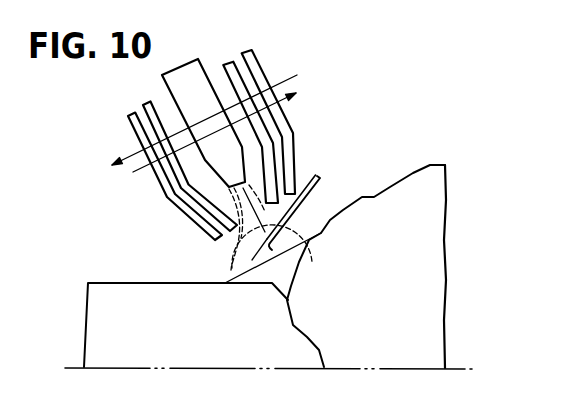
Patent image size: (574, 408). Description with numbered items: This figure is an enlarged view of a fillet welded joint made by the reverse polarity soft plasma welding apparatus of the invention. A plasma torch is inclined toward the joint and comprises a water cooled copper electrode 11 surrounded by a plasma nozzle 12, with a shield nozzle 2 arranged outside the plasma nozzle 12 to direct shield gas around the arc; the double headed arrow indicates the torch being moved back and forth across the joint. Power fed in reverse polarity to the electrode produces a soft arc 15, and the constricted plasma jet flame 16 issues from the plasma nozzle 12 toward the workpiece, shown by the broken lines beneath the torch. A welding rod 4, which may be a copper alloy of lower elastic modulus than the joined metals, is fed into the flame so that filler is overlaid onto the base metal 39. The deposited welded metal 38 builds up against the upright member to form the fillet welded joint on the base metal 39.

The water cooled copper electrode 11 is at (186, 76).
The plasma nozzle 12 is at (229, 66).
The shield nozzle 2 is at (251, 58).
The welding rod 4 is at (320, 182).
The soft arc 15 is at (238, 250).
The plasma jet flame 16 is at (235, 265).
The welded metal 38 is at (384, 205).
The base metal 39 is at (202, 347).